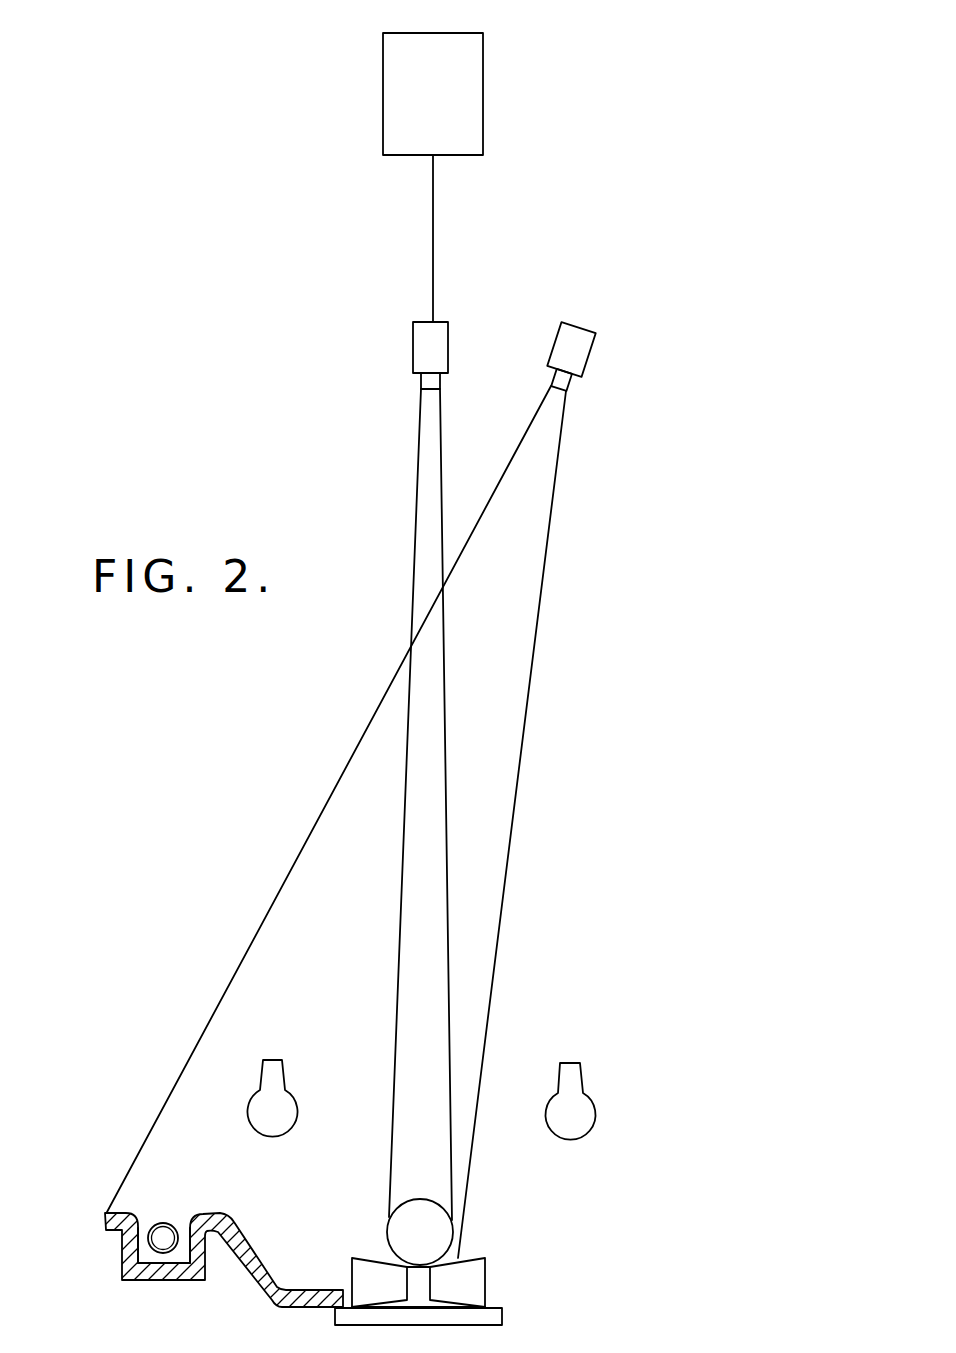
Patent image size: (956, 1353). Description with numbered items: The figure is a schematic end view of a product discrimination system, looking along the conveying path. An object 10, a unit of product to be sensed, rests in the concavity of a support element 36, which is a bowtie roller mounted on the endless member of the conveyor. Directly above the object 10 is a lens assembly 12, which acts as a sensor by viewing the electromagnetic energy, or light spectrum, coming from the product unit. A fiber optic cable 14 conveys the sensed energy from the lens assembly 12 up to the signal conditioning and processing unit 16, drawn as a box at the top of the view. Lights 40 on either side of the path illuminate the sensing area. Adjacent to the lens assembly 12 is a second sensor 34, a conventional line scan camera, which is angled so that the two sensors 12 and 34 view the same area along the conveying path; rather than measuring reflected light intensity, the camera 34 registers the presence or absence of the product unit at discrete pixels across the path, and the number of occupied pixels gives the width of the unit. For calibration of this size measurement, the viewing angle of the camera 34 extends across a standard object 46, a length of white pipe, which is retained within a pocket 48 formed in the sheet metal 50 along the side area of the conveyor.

The objects 10 is at (388, 1245).
The lens assemblies 12 is at (413, 360).
The fiber optic cables 14 is at (433, 240).
The signal conditioning and processing unit 16 is at (483, 97).
The sensor 34 is at (581, 323).
The support elements 36 is at (485, 1292).
The lights 40 is at (592, 1100).
The standard object 46 is at (172, 1222).
The pocket 48 is at (142, 1233).
The sheet metal 50 is at (257, 1285).